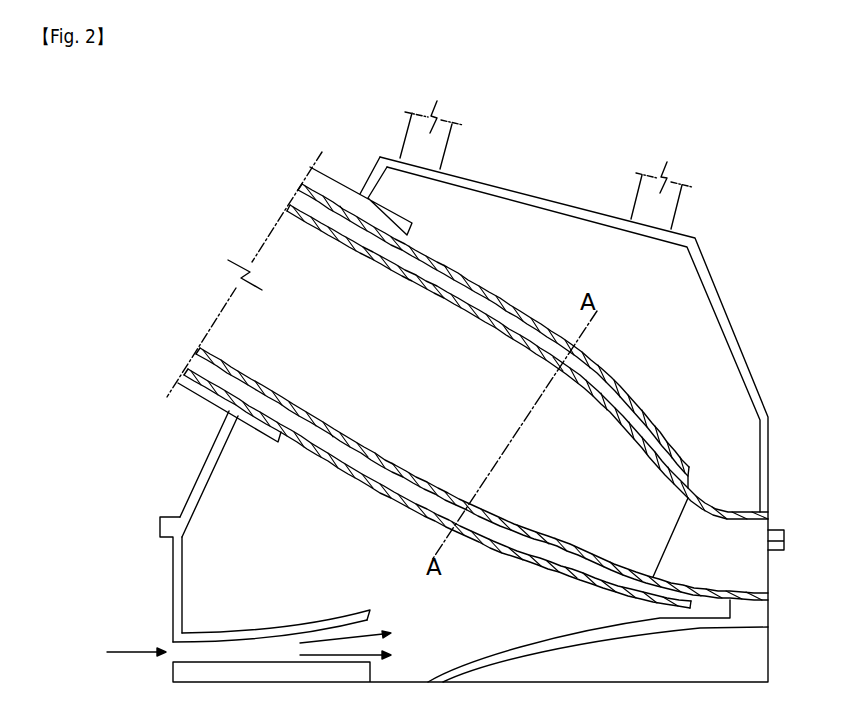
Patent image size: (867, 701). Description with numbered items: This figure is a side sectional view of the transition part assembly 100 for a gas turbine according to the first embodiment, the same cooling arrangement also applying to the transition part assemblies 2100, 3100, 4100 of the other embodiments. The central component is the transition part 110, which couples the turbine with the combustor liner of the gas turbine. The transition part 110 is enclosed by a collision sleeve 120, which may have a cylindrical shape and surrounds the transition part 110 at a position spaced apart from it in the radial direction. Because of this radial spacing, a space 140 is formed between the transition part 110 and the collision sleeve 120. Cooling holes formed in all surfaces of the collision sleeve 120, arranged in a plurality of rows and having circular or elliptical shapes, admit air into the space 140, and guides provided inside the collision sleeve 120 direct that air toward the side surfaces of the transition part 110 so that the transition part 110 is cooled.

The transition part assembly 100 is at (485, 391).
The transition part assembly 2100 is at (485, 391).
The transition part assembly 3100 is at (485, 391).
The transition part assembly 4100 is at (810, 132).
The transition part 110 is at (451, 428).
The collision sleeve 120 is at (372, 478).
The space 140 is at (413, 488).